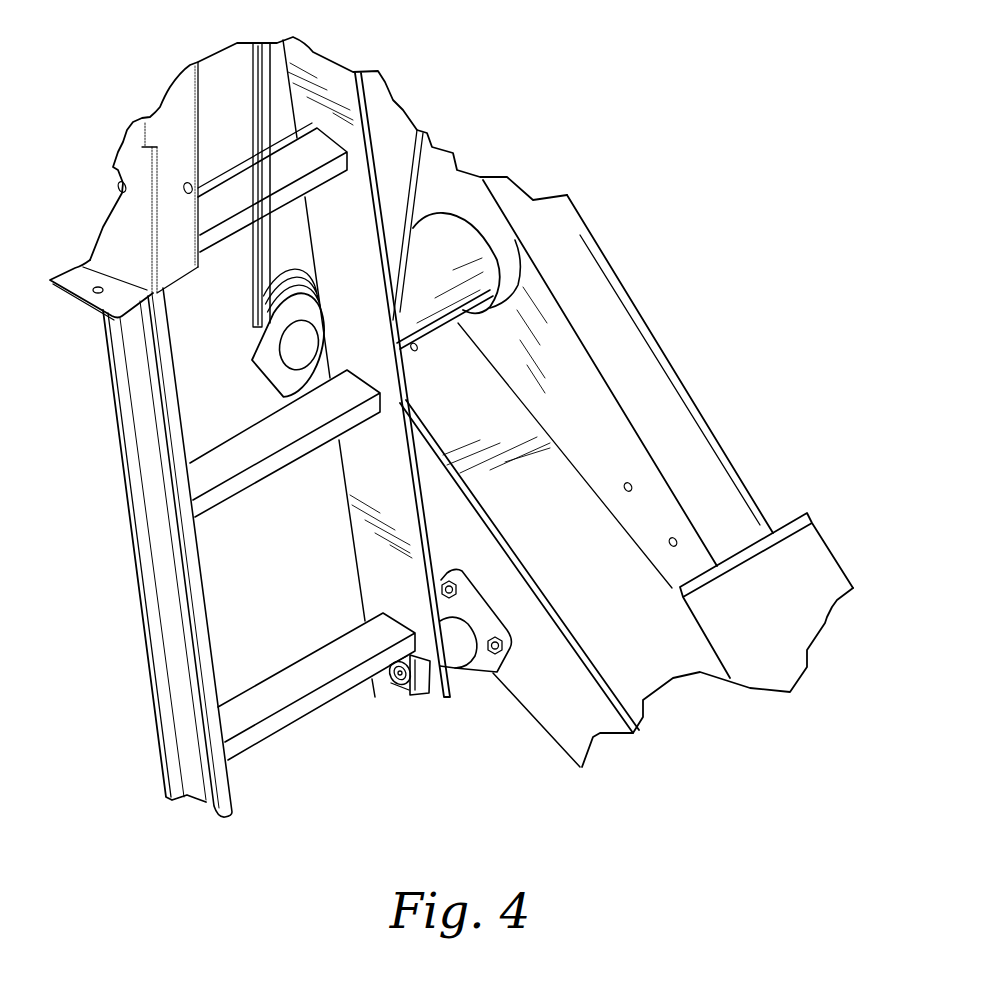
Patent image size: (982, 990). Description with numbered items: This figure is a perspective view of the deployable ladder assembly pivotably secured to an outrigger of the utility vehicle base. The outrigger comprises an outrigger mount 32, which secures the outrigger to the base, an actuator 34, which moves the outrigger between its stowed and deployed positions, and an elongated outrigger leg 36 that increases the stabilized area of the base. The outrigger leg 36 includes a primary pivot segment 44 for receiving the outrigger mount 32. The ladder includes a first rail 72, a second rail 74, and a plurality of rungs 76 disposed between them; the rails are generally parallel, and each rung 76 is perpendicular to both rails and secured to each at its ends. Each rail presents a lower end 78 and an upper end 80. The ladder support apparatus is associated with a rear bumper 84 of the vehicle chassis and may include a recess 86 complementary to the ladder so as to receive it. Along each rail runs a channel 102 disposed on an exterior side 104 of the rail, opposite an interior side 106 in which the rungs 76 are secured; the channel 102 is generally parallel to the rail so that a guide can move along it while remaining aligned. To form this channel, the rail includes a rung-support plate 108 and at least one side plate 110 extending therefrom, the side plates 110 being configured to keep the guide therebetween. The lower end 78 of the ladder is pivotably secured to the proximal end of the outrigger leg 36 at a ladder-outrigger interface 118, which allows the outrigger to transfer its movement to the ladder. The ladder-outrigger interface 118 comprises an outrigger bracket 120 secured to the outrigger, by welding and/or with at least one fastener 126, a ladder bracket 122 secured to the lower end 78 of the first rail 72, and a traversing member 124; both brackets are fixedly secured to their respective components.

The outrigger mount 32 is at (385, 123).
The actuator 34 is at (613, 302).
The outrigger leg 36 is at (583, 390).
The primary pivot segment 44 is at (463, 247).
The first rail 72 is at (316, 503).
The second rail 74 is at (137, 815).
The rungs 76 is at (228, 230).
The lower end 78 is at (105, 768).
The upper end 80 is at (70, 358).
The rear bumper 84 is at (120, 237).
The recess 86 is at (253, 85).
The channel 102 is at (203, 845).
The exterior side 104 is at (133, 705).
The interior side 106 is at (360, 600).
The rung-support plate 108 is at (177, 650).
The side plate 110 is at (183, 557).
The ladder-outrigger interface 118 is at (489, 770).
The outrigger bracket 120 is at (480, 613).
The ladder bracket 122 is at (418, 693).
The traversing member 124 is at (450, 665).
The fastener 126 is at (446, 590).